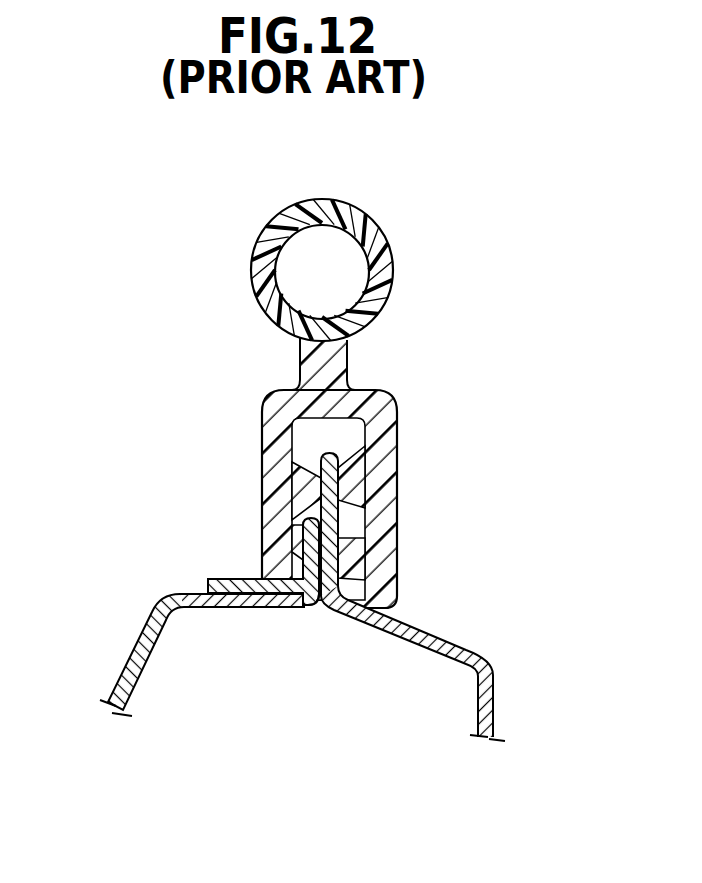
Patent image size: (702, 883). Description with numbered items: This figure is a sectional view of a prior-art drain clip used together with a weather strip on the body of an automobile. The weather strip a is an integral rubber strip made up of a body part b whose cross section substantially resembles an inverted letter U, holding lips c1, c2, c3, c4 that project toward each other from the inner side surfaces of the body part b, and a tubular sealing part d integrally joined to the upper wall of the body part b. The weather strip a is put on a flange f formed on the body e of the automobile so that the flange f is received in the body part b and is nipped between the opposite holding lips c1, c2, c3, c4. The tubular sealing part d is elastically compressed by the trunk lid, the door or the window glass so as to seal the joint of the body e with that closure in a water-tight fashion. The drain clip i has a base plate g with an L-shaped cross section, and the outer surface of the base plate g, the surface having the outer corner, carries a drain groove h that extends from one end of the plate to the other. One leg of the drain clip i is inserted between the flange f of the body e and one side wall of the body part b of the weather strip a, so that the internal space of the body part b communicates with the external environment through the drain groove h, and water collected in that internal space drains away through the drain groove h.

The weather strip a is at (324, 401).
The body part b is at (324, 499).
The holding lip c1 is at (358, 554).
The holding lip c2 is at (300, 542).
The holding lip c3 is at (360, 486).
The holding lip c4 is at (312, 488).
The tubular sealing part d is at (378, 242).
The body e is at (463, 652).
The flange f is at (420, 563).
The base plate g is at (247, 580).
The drain groove h is at (300, 582).
The drain clip i is at (198, 574).